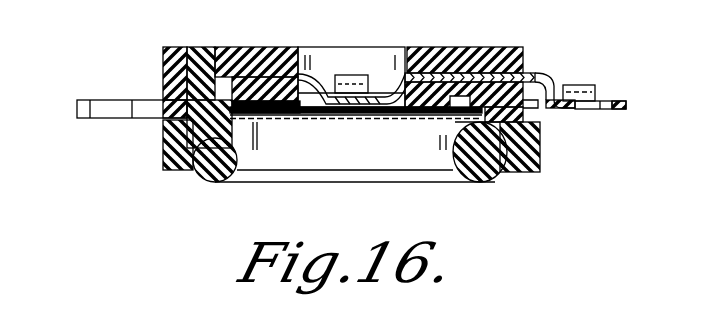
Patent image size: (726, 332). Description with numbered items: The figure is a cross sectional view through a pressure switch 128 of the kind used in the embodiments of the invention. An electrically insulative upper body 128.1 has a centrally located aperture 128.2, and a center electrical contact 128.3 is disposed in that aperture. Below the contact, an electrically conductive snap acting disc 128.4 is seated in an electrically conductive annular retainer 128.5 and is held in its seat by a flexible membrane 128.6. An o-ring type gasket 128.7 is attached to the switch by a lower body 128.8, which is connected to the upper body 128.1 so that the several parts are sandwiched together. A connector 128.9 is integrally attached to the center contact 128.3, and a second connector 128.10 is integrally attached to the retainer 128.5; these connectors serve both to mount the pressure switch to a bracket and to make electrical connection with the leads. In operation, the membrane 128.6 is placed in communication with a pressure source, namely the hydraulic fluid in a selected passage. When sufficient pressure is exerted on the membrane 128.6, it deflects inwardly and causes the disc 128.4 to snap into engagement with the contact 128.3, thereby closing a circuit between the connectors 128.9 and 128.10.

The pressure switch 128 is at (271, 47).
The upper body 128.1 is at (503, 48).
The aperture 128.2 is at (407, 73).
The center electrical contact 128.3 is at (348, 100).
The snap acting disc 128.4 is at (258, 138).
The annular retainer 128.5 is at (530, 114).
The flexible membrane 128.6 is at (372, 122).
The o-ring type gasket 128.7 is at (490, 180).
The lower body 128.8 is at (163, 144).
The connector 128.9 is at (612, 101).
The connector 128.10 is at (147, 50).